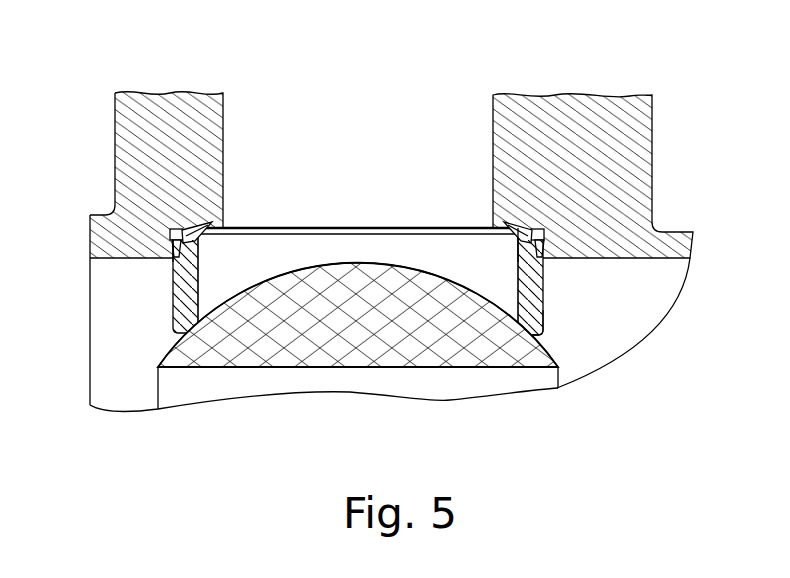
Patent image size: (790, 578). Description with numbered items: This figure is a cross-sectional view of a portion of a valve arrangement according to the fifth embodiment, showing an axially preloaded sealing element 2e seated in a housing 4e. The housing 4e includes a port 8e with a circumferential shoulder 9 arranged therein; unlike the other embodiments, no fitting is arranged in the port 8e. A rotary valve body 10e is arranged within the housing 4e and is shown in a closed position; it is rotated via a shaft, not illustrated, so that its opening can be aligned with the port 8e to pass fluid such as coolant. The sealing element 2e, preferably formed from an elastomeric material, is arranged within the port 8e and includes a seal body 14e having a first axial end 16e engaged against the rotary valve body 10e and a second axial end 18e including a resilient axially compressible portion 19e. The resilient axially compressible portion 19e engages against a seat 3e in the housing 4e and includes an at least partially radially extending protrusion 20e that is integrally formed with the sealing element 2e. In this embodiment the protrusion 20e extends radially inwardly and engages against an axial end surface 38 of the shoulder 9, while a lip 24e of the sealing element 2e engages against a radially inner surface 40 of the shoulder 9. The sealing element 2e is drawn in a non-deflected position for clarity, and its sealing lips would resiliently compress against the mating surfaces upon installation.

The port 8e is at (223, 118).
The second axial end 18e is at (115, 207).
The seat 3e is at (183, 228).
The at least partially radially extending protrusion 20e is at (212, 222).
The seal body 14e is at (183, 297).
The lip 24e is at (170, 240).
The housing 4e is at (610, 130).
The circumferential shoulder 9 is at (547, 233).
The axial end surface 38 is at (533, 229).
The resilient axially compressible portion 19e is at (519, 228).
The radially inner surface 40 is at (545, 244).
The sealing element 2e is at (543, 285).
The first axial end 16e is at (533, 325).
The rotary valve body 10e is at (373, 338).